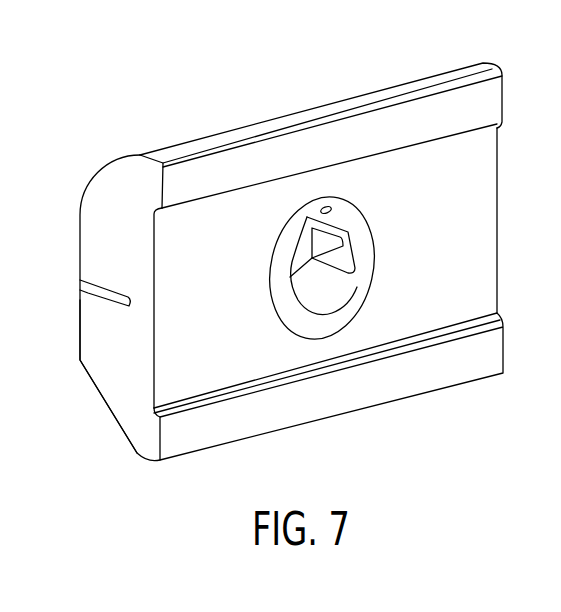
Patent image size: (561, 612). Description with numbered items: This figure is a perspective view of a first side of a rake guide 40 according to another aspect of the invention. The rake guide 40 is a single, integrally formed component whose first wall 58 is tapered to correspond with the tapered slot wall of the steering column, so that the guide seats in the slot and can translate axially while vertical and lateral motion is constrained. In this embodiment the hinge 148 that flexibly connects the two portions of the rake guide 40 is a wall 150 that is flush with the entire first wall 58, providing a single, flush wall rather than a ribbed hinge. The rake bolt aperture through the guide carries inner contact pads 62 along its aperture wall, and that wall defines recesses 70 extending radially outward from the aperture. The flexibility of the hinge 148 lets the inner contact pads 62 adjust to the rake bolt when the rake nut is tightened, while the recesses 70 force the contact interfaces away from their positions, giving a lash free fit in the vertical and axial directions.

The rake guide 40 is at (288, 85).
The first wall 58 is at (453, 177).
The inner contact pads 62 is at (323, 277).
The recesses 70 is at (312, 310).
The hinge 148 is at (140, 292).
The wall 150 is at (167, 297).